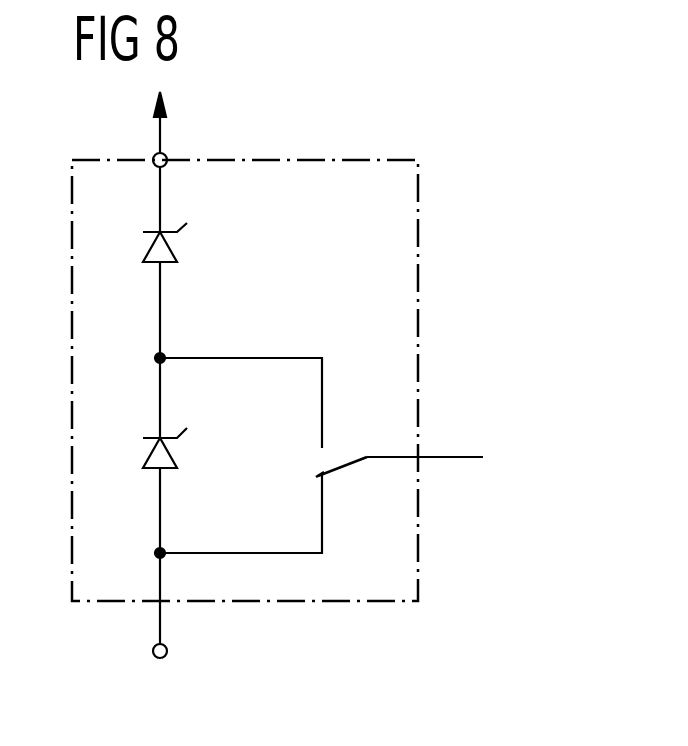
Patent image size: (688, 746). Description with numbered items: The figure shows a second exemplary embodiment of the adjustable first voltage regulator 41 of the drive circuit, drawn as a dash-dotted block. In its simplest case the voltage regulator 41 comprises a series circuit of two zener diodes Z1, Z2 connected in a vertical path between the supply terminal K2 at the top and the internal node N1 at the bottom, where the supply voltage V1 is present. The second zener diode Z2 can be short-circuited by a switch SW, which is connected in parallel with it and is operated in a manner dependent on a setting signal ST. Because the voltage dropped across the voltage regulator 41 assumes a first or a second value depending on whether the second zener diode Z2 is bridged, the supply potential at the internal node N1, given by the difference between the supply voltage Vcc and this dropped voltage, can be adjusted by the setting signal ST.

The first voltage regulator 41 is at (419, 255).
The supply terminal K2 is at (167, 157).
The internal node N1 is at (167, 653).
The first zener diode Z1 is at (176, 245).
The second zener diode Z2 is at (176, 455).
The switch SW is at (346, 459).
The setting signal ST is at (425, 483).